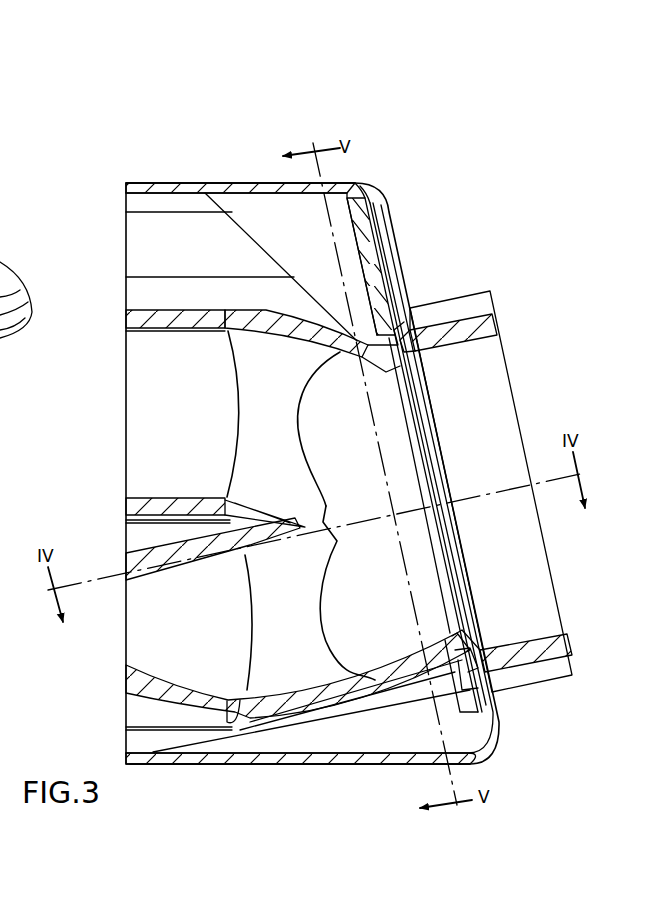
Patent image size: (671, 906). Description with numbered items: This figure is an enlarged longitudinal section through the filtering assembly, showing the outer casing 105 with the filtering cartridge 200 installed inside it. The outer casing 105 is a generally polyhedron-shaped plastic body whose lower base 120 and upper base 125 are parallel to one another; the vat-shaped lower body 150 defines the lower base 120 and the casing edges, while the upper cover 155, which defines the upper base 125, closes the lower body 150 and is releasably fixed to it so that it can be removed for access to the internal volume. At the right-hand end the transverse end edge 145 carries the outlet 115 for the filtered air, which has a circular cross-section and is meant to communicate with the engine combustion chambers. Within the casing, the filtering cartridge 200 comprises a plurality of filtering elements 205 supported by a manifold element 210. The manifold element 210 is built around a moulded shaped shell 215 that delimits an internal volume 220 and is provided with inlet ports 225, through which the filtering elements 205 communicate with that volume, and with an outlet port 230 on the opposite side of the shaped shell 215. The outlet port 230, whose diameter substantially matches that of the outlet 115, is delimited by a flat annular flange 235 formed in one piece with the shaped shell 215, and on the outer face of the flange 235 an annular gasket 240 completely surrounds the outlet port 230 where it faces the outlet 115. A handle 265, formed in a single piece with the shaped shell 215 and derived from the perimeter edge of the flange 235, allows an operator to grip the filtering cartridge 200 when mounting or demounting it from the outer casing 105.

The outer casing 105 is at (130, 160).
The upper base 125 is at (215, 183).
The upper cover 155 is at (258, 178).
The handle 265 is at (386, 208).
The filtering cartridge 200 is at (160, 300).
The manifold element 210 is at (322, 306).
The inlet ports 225 is at (237, 398).
The filtering elements 205 is at (160, 475).
The outlet port 230 is at (305, 520).
The internal volume 220 is at (381, 602).
The outlet 115 is at (425, 418).
The flat annular flange 235 is at (480, 643).
The shaped shell 215 is at (391, 678).
The annular gasket 240 is at (490, 676).
The end edge 145 is at (498, 718).
The lower body 150 is at (207, 766).
The lower base 120 is at (308, 765).